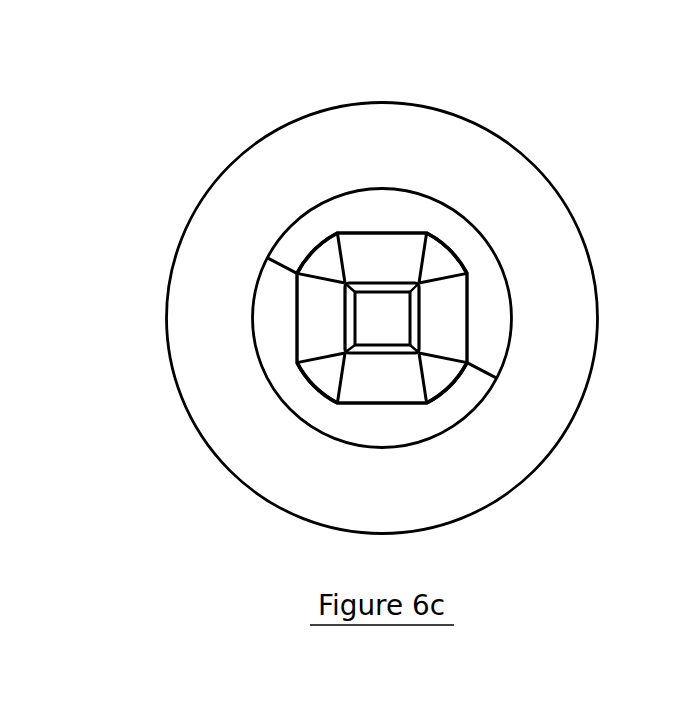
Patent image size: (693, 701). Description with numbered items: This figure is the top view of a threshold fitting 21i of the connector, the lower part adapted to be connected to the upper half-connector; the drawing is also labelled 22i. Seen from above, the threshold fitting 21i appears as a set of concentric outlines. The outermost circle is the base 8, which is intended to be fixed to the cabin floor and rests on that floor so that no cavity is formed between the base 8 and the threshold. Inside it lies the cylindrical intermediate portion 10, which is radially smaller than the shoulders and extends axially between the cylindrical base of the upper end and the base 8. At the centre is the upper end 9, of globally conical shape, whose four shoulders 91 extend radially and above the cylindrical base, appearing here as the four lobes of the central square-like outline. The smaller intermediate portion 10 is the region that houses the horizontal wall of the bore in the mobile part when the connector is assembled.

The base 8 is at (465, 495).
The upper end 9 is at (466, 293).
The cylindrical intermediate portion 10 is at (498, 320).
The shoulders 91 is at (325, 260).
The threshold fitting 21i is at (54, 456).
The drive surface 22i is at (99, 456).